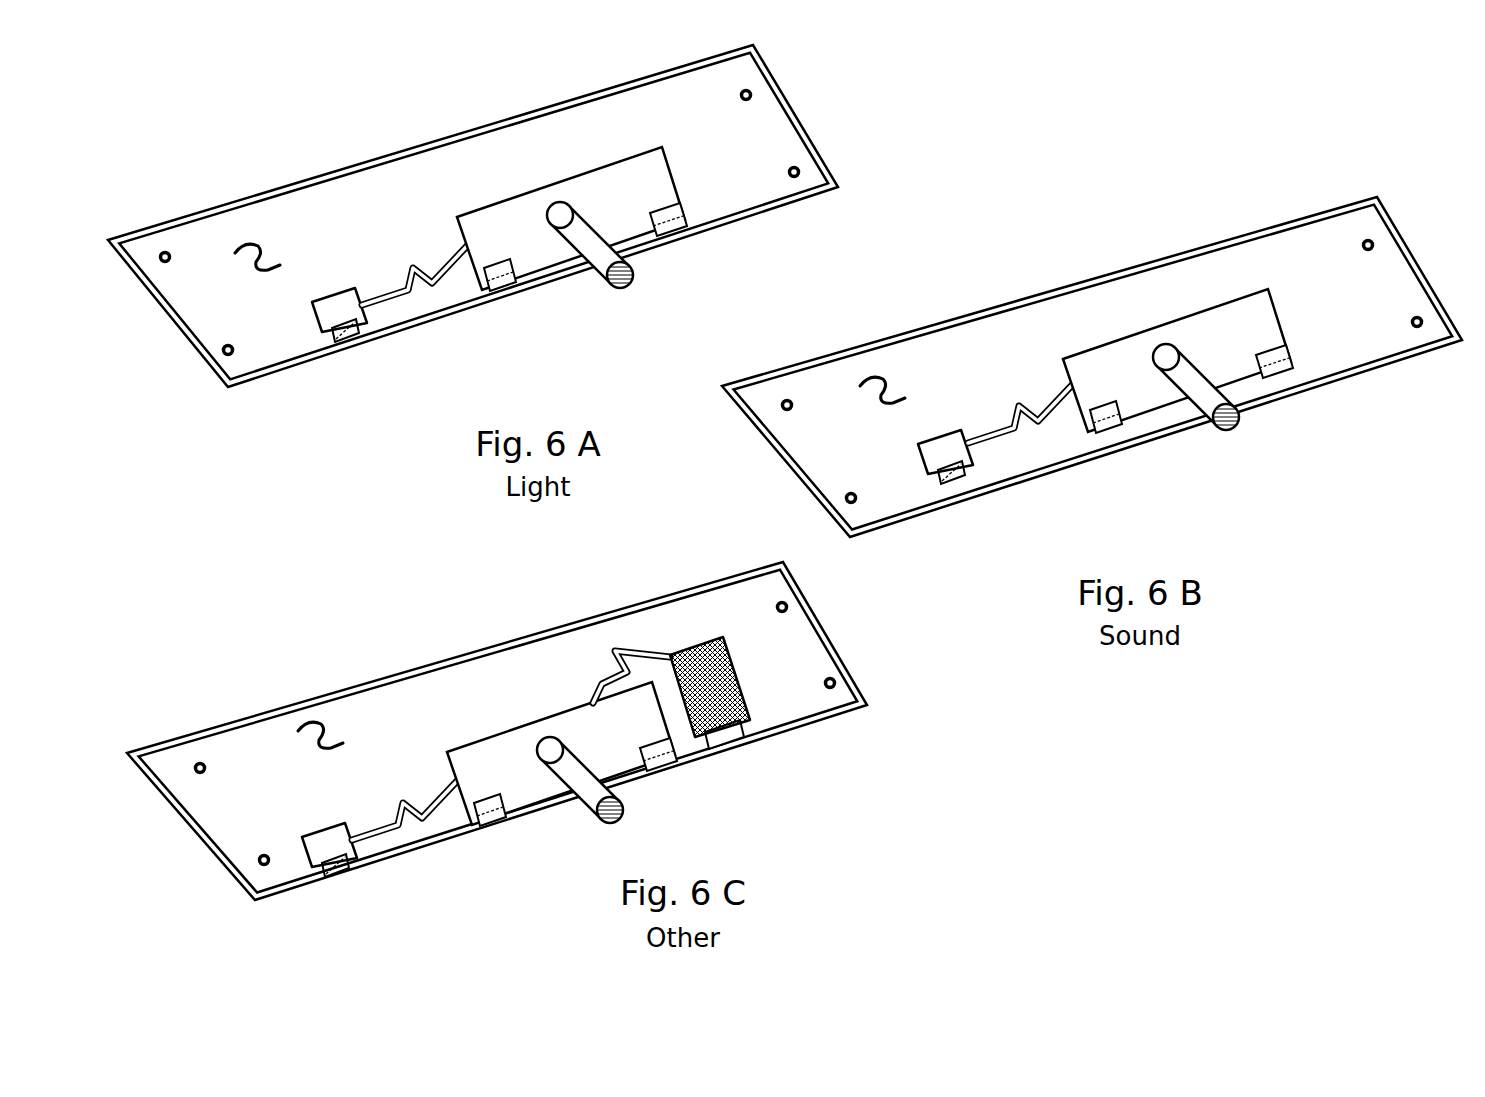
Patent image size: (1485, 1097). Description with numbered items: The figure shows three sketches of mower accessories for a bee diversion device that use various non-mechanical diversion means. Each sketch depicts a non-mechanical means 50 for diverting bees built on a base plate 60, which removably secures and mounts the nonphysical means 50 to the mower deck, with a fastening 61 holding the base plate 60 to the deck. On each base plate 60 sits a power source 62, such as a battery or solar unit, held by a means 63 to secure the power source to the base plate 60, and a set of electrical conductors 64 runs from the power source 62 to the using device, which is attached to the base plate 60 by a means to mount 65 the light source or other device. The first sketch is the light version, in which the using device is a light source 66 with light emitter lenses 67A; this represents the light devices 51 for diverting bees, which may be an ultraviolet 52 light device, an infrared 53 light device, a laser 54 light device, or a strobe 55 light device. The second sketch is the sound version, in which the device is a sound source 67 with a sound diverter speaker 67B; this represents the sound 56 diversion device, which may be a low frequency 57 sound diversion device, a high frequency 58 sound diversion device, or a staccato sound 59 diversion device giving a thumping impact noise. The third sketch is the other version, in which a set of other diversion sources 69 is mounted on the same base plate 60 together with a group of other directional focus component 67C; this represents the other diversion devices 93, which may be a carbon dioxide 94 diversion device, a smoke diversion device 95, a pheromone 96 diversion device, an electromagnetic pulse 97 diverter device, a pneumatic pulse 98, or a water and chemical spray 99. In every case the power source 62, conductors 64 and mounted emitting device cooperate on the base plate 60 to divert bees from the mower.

In FIG. 6A, the non-mechanical means for diverting bees 50 is at (491, 277).
In FIG. 6B, the non-mechanical means for diverting bees 50 is at (1079, 388).
In FIG. 6C, the non-mechanical means for diverting bees 50 is at (544, 762).
In FIG. 6A, the light devices for diverting bees 51 is at (491, 277).
In FIG. 6B, the light devices for diverting bees 51 is at (1079, 388).
In FIG. 6A, the ultraviolet light device 52 is at (491, 277).
In FIG. 6A, the infrared light device 53 is at (491, 277).
In FIG. 6A, the laser light device 54 is at (491, 277).
In FIG. 6A, the strobe light device 55 is at (491, 277).
In FIG. 6B, the sound diversion device 56 is at (1079, 388).
In FIG. 6B, the low frequency sound diversion device 57 is at (1079, 388).
In FIG. 6B, the high frequency sound diversion device 58 is at (1079, 388).
In FIG. 6B, the staccato sound diversion device 59 is at (1079, 388).
In FIG. 6A, the base plate 60 is at (258, 240).
In FIG. 6B, the base plate 60 is at (880, 380).
In FIG. 6C, the base plate 60 is at (317, 725).
In FIG. 6A, the fastening 61 is at (797, 168).
In FIG. 6B, the fastening 61 is at (782, 409).
In FIG. 6C, the fastening 61 is at (203, 764).
In FIG. 6A, the power source 62 is at (325, 315).
In FIG. 6B, the power source 62 is at (942, 482).
In FIG. 6C, the power source 62 is at (312, 853).
In FIG. 6A, the means to secure power source to base 63 is at (343, 330).
In FIG. 6B, the means to secure power source to base 63 is at (948, 447).
In FIG. 6C, the means to secure power source to base 63 is at (327, 875).
In FIG. 6A, the set of electrical conductors 64 is at (413, 265).
In FIG. 6B, the set of electrical conductors 64 is at (1022, 407).
In FIG. 6C, the set of electrical conductors 64 is at (387, 837).
In FIG. 6A, the means to mount light source on plate 65 is at (500, 277).
In FIG. 6B, the means to mount light source on plate 65 is at (1100, 422).
In FIG. 6C, the means to mount light source on plate 65 is at (478, 823).
In FIG. 6A, the light source 66 is at (495, 220).
In FIG. 6B, the sound source 67 is at (1097, 360).
In FIG. 6A, the light emitter lenses 67A is at (610, 285).
In FIG. 6B, the sound diverter speaker 67B is at (1212, 428).
In FIG. 6C, the other directional focus component 67C is at (583, 813).
In FIG. 6C, the set of other diversion sources 69 is at (675, 660).
In FIG. 6C, the other diversion devices 93 is at (544, 762).
In FIG. 6C, the carbon dioxide diversion device 94 is at (544, 762).
In FIG. 6C, the smoke diversion device 95 is at (544, 762).
In FIG. 6C, the pheromone diversion device 96 is at (544, 762).
In FIG. 6C, the electromagnetic pulse diverter device 97 is at (544, 762).
In FIG. 6C, the pneumatic pulse 98 is at (544, 762).
In FIG. 6C, the water and chemical spray 99 is at (544, 762).